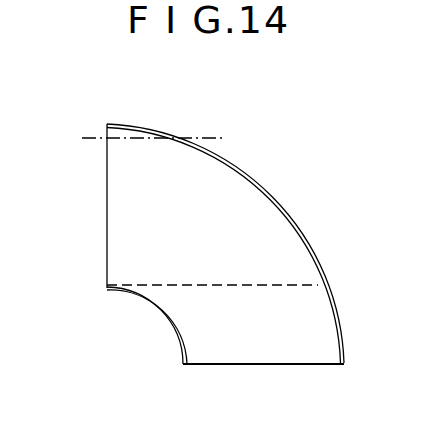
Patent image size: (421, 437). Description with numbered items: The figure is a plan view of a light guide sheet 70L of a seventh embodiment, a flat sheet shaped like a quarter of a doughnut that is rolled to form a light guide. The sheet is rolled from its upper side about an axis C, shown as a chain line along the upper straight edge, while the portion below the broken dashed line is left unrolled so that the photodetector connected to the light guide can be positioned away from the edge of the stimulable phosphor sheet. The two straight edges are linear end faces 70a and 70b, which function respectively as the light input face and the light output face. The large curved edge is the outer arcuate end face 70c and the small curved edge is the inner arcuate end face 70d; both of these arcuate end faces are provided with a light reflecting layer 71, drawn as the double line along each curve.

The light guide sheet 70L is at (204, 251).
The linear end face 70a is at (246, 365).
The linear end face 70b is at (107, 207).
The outer arcuate end face 70c is at (257, 183).
The inner arcuate end face 70d is at (139, 295).
The light reflecting layer 71 is at (307, 237).
The axis C is at (213, 136).